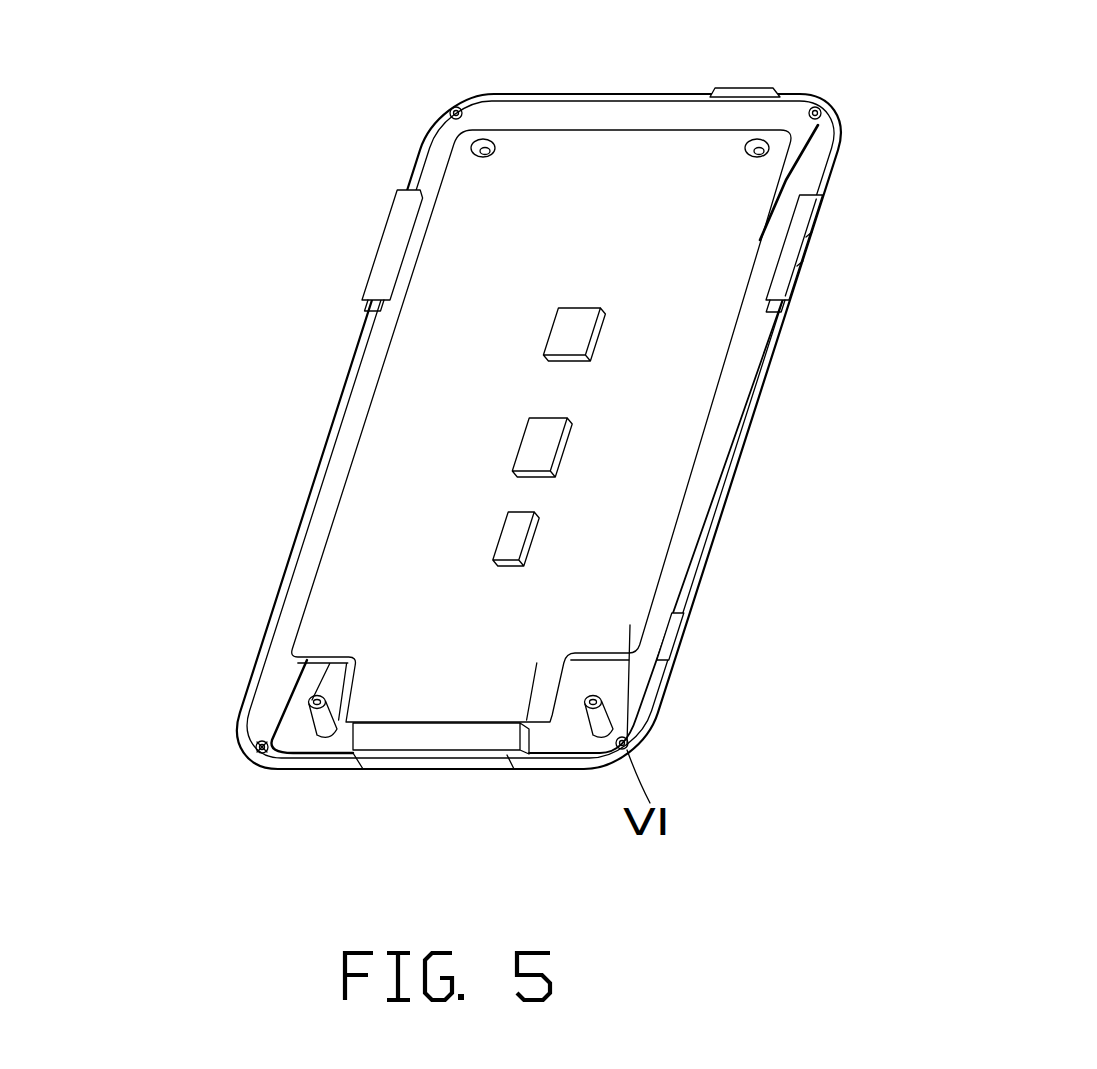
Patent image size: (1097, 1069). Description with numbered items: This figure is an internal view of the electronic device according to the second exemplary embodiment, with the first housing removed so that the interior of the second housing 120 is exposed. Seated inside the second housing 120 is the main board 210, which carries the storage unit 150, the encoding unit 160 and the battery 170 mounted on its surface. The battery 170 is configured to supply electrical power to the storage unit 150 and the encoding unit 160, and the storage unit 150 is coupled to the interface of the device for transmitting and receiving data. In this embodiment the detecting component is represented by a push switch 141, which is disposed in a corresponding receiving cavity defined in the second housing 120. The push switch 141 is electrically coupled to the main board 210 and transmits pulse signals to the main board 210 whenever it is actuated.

The second housing 120 is at (733, 488).
The main board 210 is at (585, 150).
The storage unit 150 is at (600, 323).
The encoding unit 160 is at (566, 445).
The battery 170 is at (537, 540).
The push switch 141 is at (256, 747).